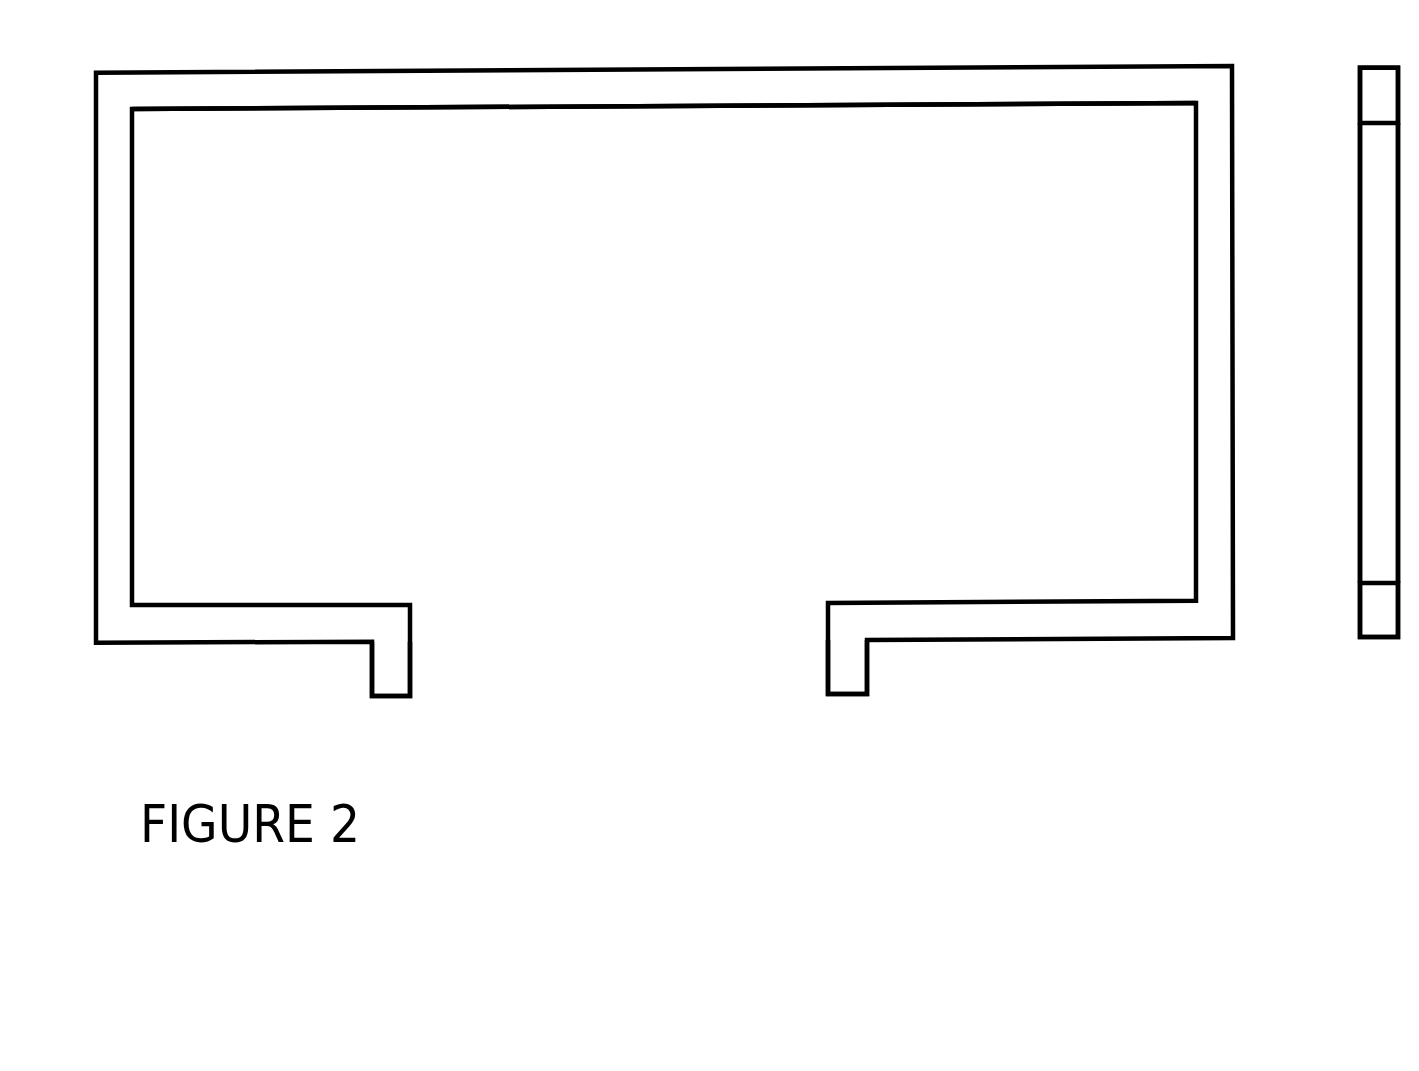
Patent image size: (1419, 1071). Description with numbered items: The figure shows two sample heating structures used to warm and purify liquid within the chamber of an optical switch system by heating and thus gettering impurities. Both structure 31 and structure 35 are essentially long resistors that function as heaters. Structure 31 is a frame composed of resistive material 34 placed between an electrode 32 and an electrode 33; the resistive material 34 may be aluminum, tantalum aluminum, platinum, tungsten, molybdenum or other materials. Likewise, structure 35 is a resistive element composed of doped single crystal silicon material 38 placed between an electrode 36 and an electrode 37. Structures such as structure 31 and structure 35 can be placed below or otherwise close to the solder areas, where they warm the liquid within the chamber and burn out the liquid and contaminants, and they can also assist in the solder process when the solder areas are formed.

The structure 31 is at (1091, 685).
The electrode 32 is at (398, 690).
The electrode 33 is at (856, 688).
The resistive material 34 is at (636, 105).
The structure 35 is at (1336, 499).
The electrode 36 is at (1387, 632).
The electrode 37 is at (1360, 89).
The doped single crystal silicon material 38 is at (1360, 329).